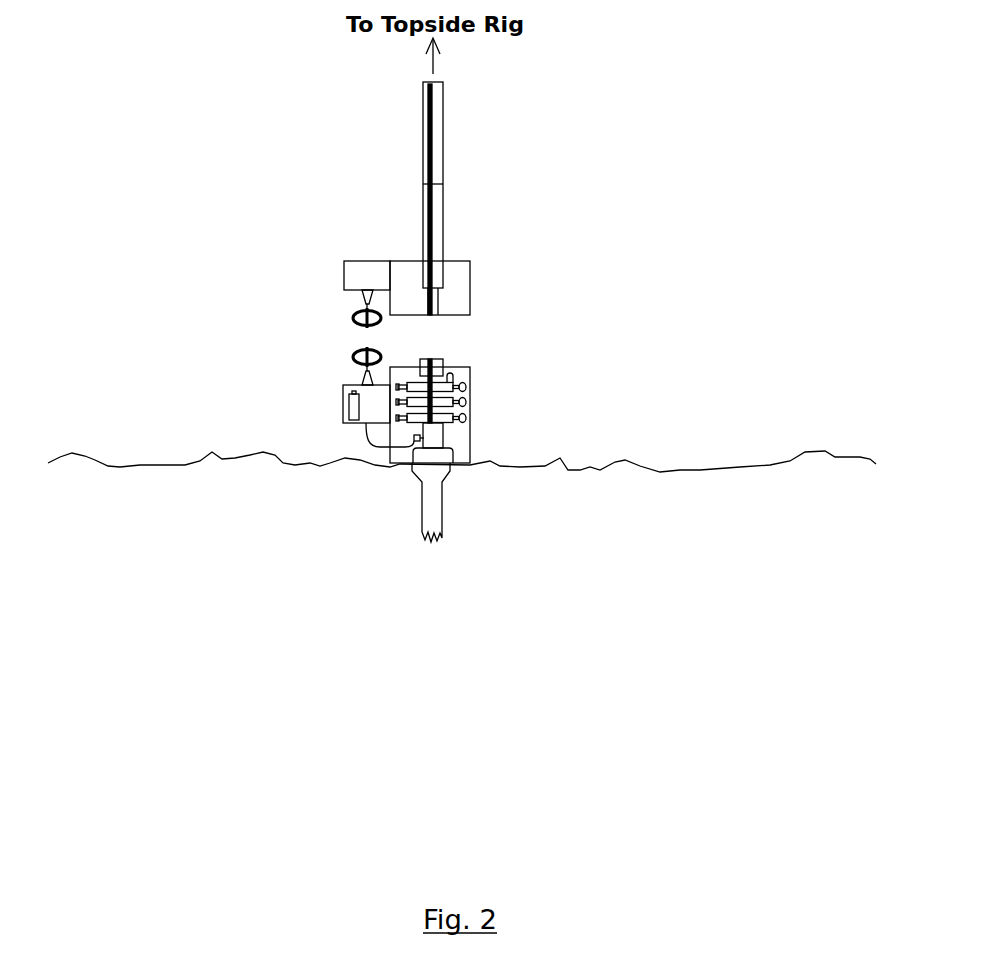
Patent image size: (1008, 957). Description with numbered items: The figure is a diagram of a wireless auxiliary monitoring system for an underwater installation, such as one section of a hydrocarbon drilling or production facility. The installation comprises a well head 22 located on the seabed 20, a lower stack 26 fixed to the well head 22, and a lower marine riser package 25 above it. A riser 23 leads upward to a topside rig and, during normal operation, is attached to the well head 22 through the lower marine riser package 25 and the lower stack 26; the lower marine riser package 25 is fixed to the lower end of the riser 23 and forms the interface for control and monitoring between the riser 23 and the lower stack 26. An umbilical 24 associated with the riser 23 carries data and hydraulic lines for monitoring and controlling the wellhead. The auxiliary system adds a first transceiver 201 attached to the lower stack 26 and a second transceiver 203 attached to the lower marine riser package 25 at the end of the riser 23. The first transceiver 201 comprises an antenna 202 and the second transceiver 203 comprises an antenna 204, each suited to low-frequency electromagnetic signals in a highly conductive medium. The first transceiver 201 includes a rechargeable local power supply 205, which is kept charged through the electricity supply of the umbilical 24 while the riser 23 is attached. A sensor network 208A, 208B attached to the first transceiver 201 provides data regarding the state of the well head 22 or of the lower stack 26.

The seabed 20 is at (462, 475).
The well head 22 is at (452, 470).
The riser 23 is at (443, 213).
The umbilical 24 is at (433, 155).
The lower marine riser package 25 is at (470, 290).
The lower stack 26 is at (470, 438).
The first transceiver 201 is at (343, 390).
The antenna 202 is at (352, 357).
The second transceiver 203 is at (344, 272).
The antenna 204 is at (352, 318).
The local power supply 205 is at (349, 413).
The sensor network 208A is at (414, 441).
The sensor network 208B is at (455, 379).